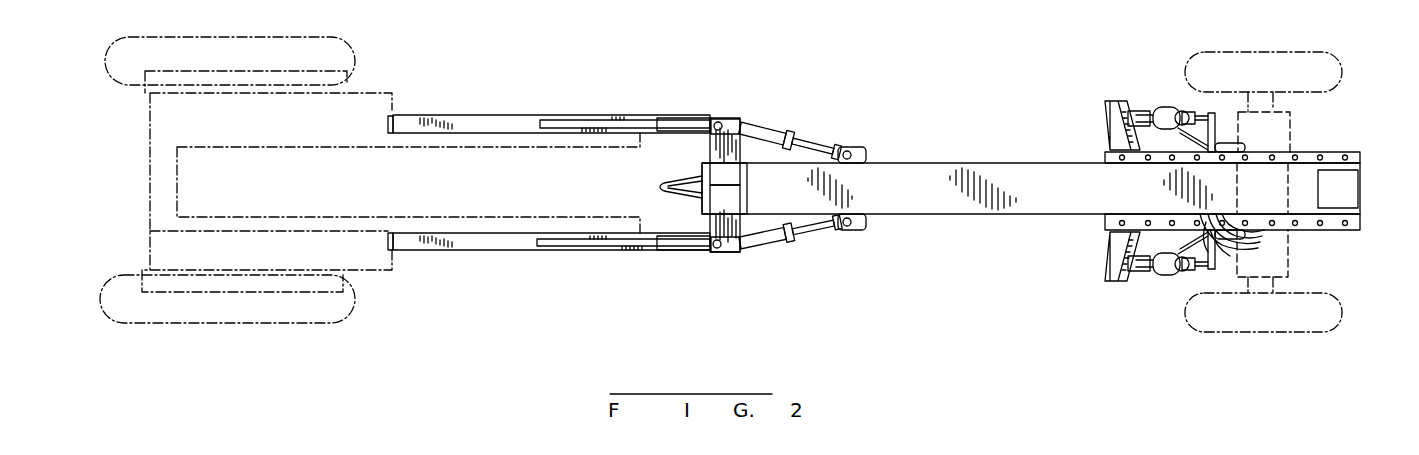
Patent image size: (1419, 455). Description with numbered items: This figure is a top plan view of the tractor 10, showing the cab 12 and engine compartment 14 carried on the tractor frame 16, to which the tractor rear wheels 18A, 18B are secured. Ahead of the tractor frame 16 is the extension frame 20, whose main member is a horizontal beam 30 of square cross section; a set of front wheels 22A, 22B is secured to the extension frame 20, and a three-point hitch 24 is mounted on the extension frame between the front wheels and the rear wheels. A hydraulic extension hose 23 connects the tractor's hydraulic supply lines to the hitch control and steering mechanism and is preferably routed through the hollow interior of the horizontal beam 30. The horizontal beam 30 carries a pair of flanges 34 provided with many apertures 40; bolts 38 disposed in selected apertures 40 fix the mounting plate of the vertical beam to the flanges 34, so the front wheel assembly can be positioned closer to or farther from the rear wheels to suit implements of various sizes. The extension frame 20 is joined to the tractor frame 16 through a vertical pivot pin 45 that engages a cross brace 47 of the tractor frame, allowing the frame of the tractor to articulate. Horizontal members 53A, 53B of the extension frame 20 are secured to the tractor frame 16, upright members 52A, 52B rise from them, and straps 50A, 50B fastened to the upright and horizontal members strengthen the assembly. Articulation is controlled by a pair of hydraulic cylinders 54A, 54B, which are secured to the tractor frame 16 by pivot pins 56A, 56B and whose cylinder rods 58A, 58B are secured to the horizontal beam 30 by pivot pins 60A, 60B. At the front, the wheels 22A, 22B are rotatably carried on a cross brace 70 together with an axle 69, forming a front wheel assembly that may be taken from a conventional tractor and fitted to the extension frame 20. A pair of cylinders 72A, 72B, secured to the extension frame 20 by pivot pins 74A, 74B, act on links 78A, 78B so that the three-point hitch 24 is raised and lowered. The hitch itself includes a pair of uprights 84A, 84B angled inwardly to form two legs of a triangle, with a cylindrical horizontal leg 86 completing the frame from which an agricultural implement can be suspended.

The tractor 10 is at (424, 82).
The cab 12 is at (224, 196).
The engine compartment 14 is at (493, 196).
The frame 16 is at (398, 149).
The tractor rear wheel 18A is at (345, 292).
The tractor rear wheel 18B is at (348, 71).
The extension frame 20 is at (1004, 143).
The front wheel 22A is at (1325, 330).
The front wheel 22B is at (1308, 54).
The extension hose 23 is at (680, 171).
The three-point hitch 24 is at (1068, 262).
The horizontal beam 30 is at (940, 178).
The flange 34 is at (1358, 222).
The bolt 38 is at (1250, 159).
The aperture 40 is at (1321, 158).
The second vertical pivot pin 45 is at (722, 187).
The cross brace 47 is at (712, 226).
The strap 50A is at (610, 251).
The strap 50B is at (608, 119).
The upright member 52A is at (676, 252).
The upright member 52B is at (688, 117).
The horizontal member 53A is at (500, 251).
The horizontal member 53B is at (505, 115).
The hydraulic cylinder 54A is at (756, 258).
The hydraulic cylinder 54B is at (755, 123).
The pivot pin 56A is at (717, 256).
The pivot pin 56B is at (718, 120).
The hydraulic cylinder rod 58A is at (819, 241).
The hydraulic cylinder rod 58B is at (812, 140).
The pivot pin 60A is at (856, 231).
The pivot pin 60B is at (851, 150).
The axle 69 is at (1272, 108).
The cross brace 70 is at (1290, 275).
The cylinder 72A is at (1166, 278).
The cylinder 72B is at (1175, 107).
The pivot pin 74A is at (1213, 280).
The pivot pin 74B is at (1222, 140).
The link 78A is at (1226, 256).
The link 78B is at (1228, 147).
The upright 84A is at (1110, 238).
The upright 84B is at (1110, 140).
The horizontal leg 86 is at (1106, 131).